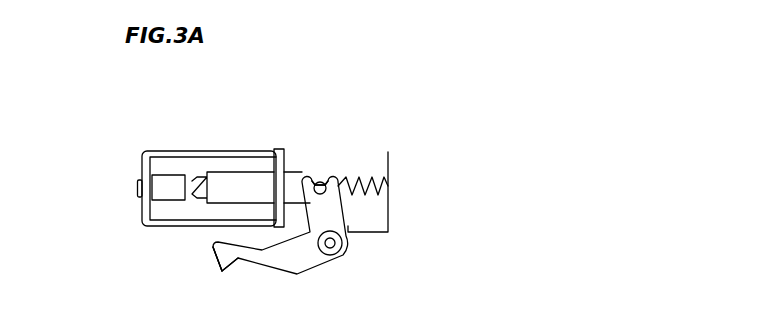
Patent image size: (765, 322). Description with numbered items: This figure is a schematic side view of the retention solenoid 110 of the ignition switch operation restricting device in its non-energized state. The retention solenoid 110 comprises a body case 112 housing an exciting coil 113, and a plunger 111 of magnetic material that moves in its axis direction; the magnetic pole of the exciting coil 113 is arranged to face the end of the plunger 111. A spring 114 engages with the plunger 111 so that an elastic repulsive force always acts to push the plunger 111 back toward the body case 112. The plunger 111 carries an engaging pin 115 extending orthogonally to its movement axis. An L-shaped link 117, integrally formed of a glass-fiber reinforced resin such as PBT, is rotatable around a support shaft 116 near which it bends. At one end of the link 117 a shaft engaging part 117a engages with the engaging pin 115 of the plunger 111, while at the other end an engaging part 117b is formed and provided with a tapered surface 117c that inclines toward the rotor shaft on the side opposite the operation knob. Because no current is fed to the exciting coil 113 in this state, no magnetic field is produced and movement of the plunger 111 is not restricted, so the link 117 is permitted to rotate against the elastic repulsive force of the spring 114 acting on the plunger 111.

The retention solenoid 110 is at (271, 95).
The plunger 111 is at (290, 172).
The body case 112 is at (142, 213).
The exciting coil 113 is at (170, 175).
The spring 114 is at (381, 182).
The engaging pin 115 is at (321, 182).
The support shaft 116 is at (340, 247).
The link 117 is at (302, 273).
The shaft engaging part 117a is at (327, 192).
The engaging part 117b is at (227, 277).
The tapered surface 117c is at (215, 257).